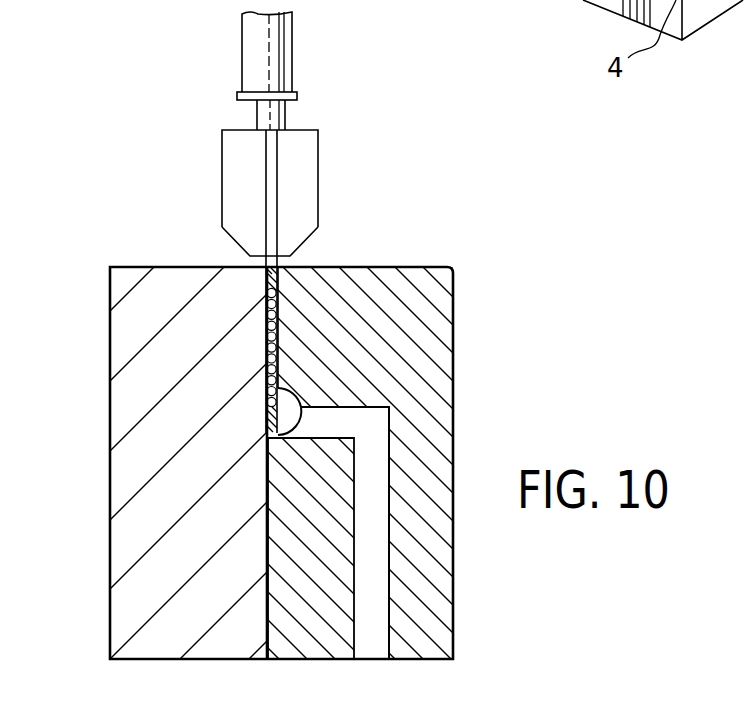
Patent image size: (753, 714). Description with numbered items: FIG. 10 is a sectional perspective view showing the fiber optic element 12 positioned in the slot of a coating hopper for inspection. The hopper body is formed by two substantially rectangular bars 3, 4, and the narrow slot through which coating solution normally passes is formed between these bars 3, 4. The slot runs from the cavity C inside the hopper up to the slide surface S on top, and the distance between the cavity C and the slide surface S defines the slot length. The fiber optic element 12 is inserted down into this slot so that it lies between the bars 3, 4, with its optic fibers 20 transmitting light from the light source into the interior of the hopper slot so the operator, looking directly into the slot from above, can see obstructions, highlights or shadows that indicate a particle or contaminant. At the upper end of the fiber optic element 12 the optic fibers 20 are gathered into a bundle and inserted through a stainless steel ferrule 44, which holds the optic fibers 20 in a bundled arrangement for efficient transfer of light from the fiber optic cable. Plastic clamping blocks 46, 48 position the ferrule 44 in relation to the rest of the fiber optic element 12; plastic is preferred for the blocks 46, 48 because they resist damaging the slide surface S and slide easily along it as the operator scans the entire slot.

The ferrule 44 is at (272, 56).
The clamping block 48 is at (318, 146).
The clamping block 46 is at (222, 190).
The fiber optic element 12 is at (279, 287).
The optic fibers 20 is at (281, 323).
The slide surface S is at (422, 267).
The bar 4 is at (110, 427).
The bar 3 is at (453, 340).
The cavity C is at (280, 383).